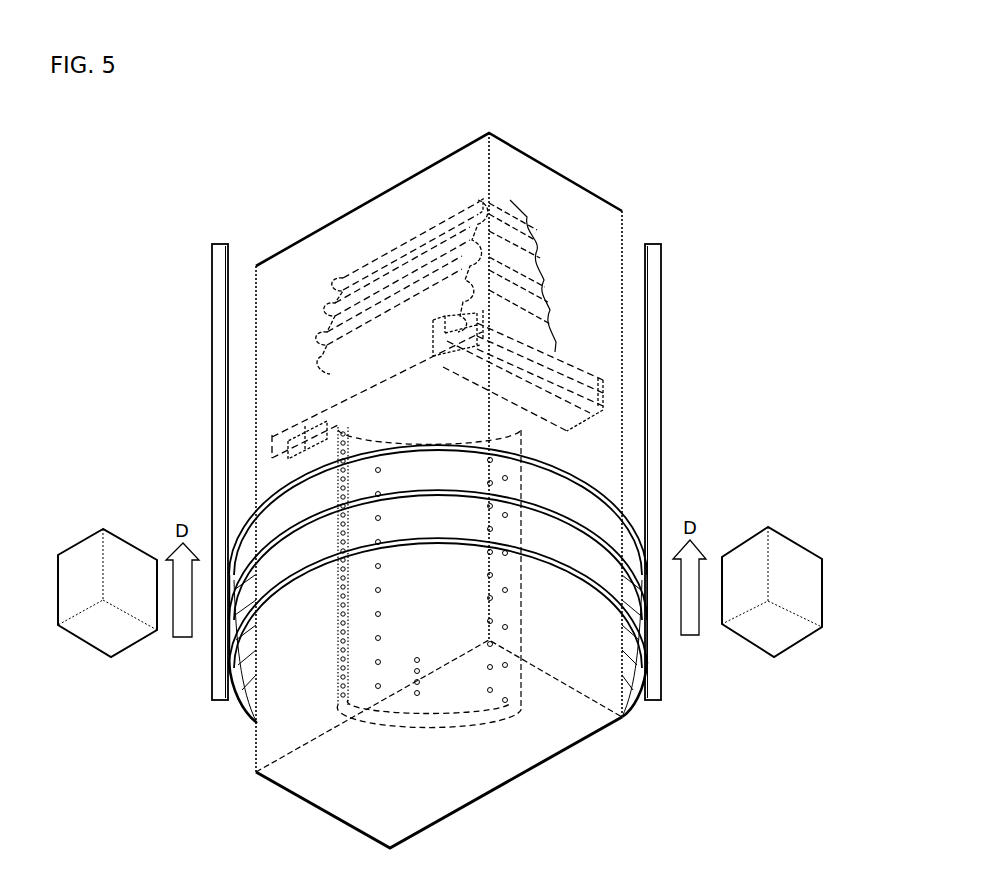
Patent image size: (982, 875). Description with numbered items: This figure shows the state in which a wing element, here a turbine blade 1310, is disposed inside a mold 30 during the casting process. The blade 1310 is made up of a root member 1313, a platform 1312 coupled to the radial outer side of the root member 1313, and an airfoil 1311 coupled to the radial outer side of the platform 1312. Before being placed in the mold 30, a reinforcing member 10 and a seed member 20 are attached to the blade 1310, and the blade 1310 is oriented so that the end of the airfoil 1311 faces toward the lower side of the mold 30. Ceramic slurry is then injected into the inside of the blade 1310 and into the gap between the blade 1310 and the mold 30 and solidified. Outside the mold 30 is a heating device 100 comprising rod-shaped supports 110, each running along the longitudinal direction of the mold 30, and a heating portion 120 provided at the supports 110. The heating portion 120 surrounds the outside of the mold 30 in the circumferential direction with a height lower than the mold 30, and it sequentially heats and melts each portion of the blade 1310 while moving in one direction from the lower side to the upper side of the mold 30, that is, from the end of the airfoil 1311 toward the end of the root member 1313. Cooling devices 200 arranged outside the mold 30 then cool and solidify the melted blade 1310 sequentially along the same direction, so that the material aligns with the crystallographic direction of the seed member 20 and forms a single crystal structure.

The reinforcing member 10 is at (502, 273).
The seed member 20 is at (498, 722).
The mold 30 is at (256, 290).
The heating device 100 is at (368, 472).
The supports 110 is at (225, 400).
The heating portion 120 is at (271, 476).
The cooling devices 200 is at (83, 566).
The turbine blade 1310 is at (341, 252).
The airfoil 1311 is at (622, 462).
The platform 1312 is at (612, 348).
The root member 1313 is at (515, 268).